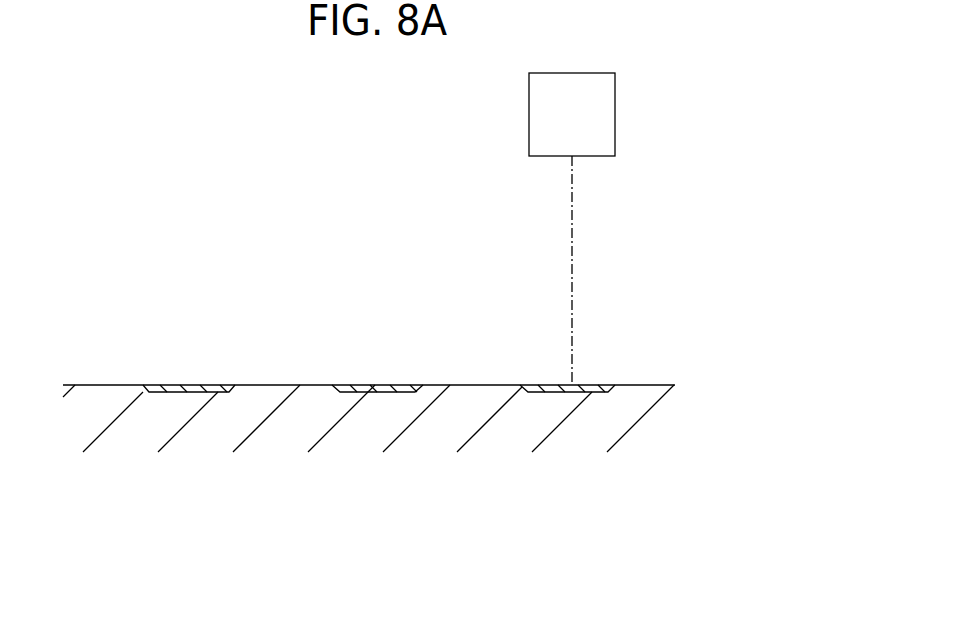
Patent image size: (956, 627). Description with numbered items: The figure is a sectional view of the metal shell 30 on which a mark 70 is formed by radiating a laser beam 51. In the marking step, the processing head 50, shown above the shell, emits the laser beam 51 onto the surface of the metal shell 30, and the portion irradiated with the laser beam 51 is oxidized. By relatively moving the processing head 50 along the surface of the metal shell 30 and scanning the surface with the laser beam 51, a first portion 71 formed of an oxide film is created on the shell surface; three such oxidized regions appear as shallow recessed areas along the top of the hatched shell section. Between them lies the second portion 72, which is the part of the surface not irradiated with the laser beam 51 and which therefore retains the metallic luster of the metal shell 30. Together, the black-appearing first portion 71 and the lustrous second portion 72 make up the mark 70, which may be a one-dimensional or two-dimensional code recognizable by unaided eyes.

The metal shell 30 is at (642, 402).
The processing head 50 is at (593, 117).
The laser beam 51 is at (572, 220).
The mark 70 is at (391, 270).
The first portion 71 is at (596, 390).
The second portion 72 is at (282, 385).